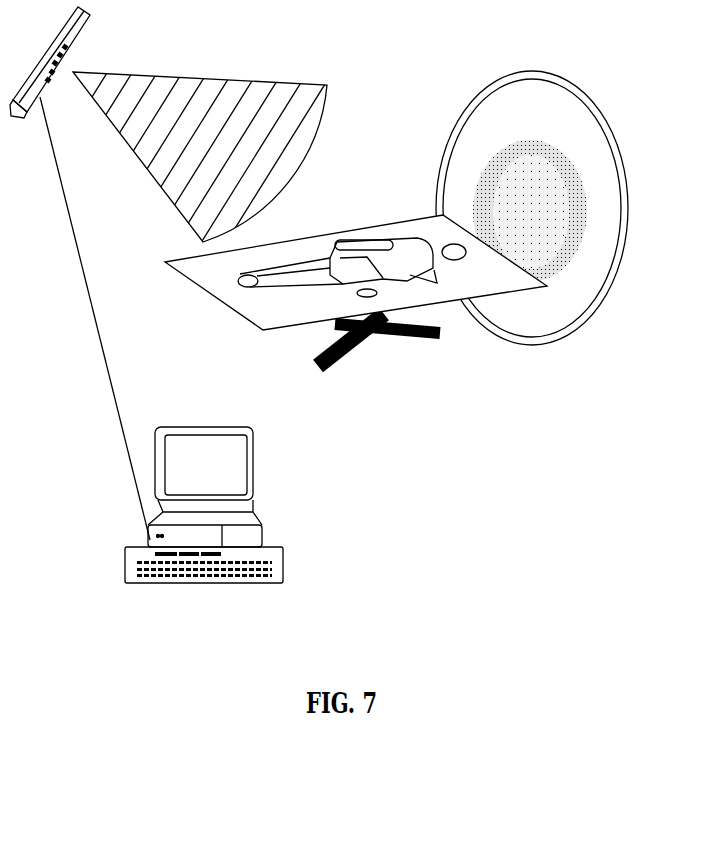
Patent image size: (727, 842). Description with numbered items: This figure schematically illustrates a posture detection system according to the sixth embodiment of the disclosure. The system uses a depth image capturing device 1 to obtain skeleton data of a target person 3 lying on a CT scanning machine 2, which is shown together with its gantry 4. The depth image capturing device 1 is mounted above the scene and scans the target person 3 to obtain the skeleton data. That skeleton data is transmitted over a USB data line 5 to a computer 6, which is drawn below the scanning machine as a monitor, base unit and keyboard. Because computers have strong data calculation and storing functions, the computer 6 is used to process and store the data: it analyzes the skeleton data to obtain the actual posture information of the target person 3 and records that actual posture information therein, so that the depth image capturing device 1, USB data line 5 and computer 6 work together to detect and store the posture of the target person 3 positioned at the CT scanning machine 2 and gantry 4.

The depth image capturing device 1 is at (34, 96).
The CT scanning machine 2 is at (185, 277).
The target person 3 is at (453, 265).
The gantry 4 is at (600, 317).
The USB data line 5 is at (121, 433).
The computer 6 is at (280, 518).